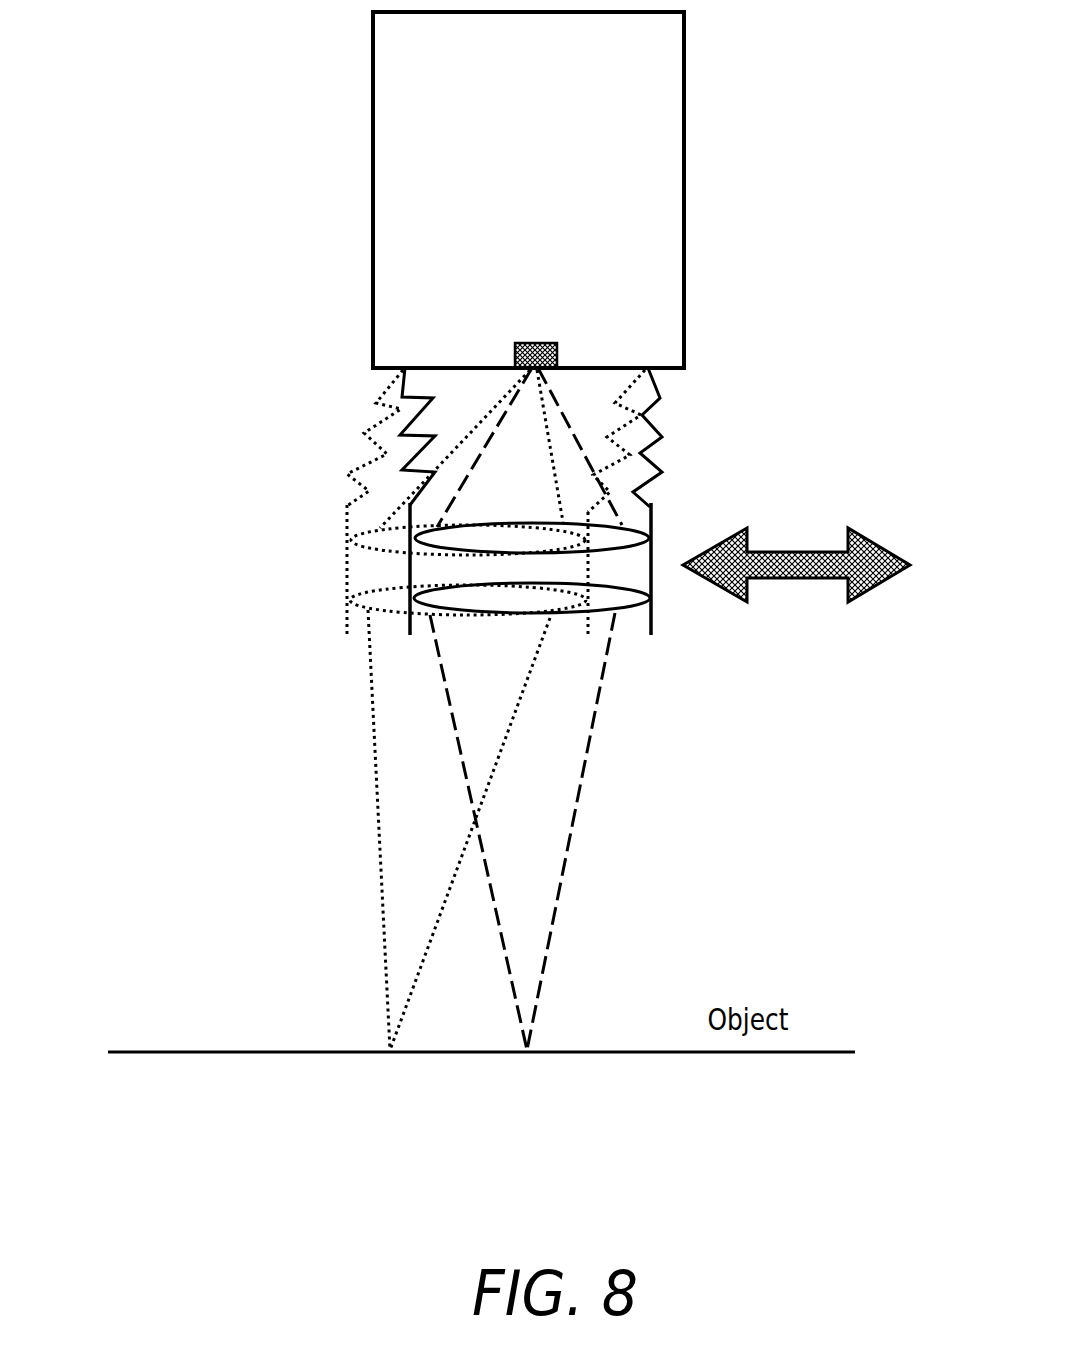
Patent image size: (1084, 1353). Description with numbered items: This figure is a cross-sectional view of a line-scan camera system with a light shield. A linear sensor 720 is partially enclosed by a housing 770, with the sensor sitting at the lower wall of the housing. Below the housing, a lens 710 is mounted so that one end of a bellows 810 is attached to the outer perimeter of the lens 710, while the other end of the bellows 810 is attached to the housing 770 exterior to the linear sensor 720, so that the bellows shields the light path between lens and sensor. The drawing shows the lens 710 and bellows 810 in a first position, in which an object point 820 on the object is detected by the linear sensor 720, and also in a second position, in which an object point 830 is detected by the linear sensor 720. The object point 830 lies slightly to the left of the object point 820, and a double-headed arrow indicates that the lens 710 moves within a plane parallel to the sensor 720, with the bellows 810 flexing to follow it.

The housing 770 is at (528, 190).
The linear sensor 720 is at (540, 325).
The lens 710 is at (425, 575).
The bellows 810 is at (663, 407).
The object point 820 is at (526, 732).
The object point 830 is at (462, 733).